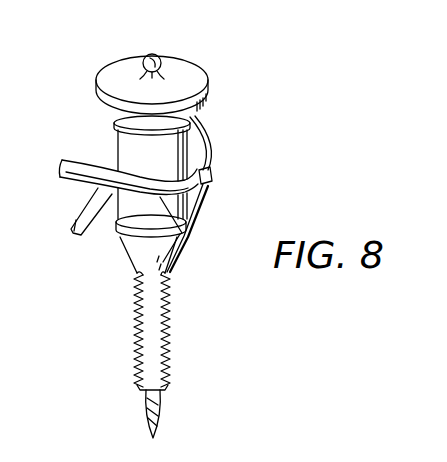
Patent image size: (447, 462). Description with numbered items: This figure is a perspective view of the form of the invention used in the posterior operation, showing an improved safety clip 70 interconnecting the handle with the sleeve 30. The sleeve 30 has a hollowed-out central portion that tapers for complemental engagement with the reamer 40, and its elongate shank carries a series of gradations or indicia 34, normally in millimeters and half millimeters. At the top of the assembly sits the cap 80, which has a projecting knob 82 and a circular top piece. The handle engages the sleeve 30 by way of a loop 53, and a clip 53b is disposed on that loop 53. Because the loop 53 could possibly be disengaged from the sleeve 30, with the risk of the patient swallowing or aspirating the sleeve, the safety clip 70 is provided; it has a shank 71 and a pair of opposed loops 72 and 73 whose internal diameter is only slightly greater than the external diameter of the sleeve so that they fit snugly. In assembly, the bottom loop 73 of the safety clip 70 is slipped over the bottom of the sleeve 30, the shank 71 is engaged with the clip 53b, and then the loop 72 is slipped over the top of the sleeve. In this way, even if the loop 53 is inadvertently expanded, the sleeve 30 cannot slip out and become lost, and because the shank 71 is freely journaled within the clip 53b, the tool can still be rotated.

The sleeve 30 is at (117, 149).
The gradations or indicia 34 is at (172, 322).
The reamer 40 is at (162, 425).
The loop 53 is at (186, 233).
The clip 53b is at (211, 174).
The safety clip 70 is at (211, 119).
The shank 71 is at (204, 150).
The loop 72 is at (104, 120).
The bottom loop 73 is at (138, 233).
The cap 80 is at (210, 72).
The projecting knob 82 is at (159, 50).